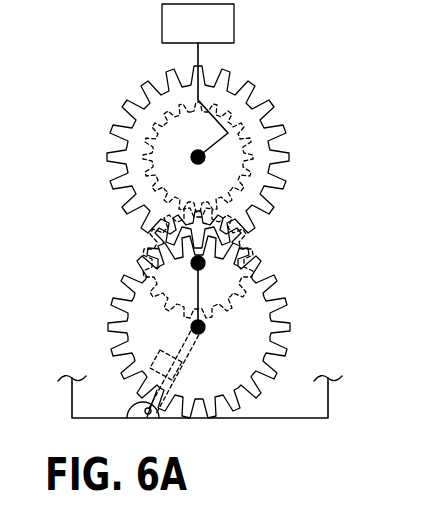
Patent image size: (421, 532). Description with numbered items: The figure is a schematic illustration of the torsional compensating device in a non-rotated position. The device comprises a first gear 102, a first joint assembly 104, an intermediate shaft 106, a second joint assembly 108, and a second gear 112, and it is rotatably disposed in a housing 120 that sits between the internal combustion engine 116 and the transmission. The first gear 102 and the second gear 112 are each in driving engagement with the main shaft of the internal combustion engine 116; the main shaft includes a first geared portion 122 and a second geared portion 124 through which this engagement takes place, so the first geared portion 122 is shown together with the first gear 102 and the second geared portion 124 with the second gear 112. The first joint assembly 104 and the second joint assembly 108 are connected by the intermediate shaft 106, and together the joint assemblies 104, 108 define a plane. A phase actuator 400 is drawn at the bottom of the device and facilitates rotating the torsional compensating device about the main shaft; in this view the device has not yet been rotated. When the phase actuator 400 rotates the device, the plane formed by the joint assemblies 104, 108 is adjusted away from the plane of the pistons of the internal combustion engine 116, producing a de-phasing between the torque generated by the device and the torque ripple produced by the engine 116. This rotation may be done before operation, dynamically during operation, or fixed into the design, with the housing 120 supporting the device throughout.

The internal combustion engine 116 is at (162, 22).
The second geared portion 124 is at (125, 118).
The first geared portion 122 is at (175, 165).
The first joint assembly 104 is at (192, 262).
The first gear 102 is at (152, 288).
The intermediate shaft 106 is at (205, 283).
The second joint assembly 108 is at (191, 327).
The second gear 112 is at (248, 326).
The phase actuator 400 is at (142, 360).
The housing 120 is at (287, 417).